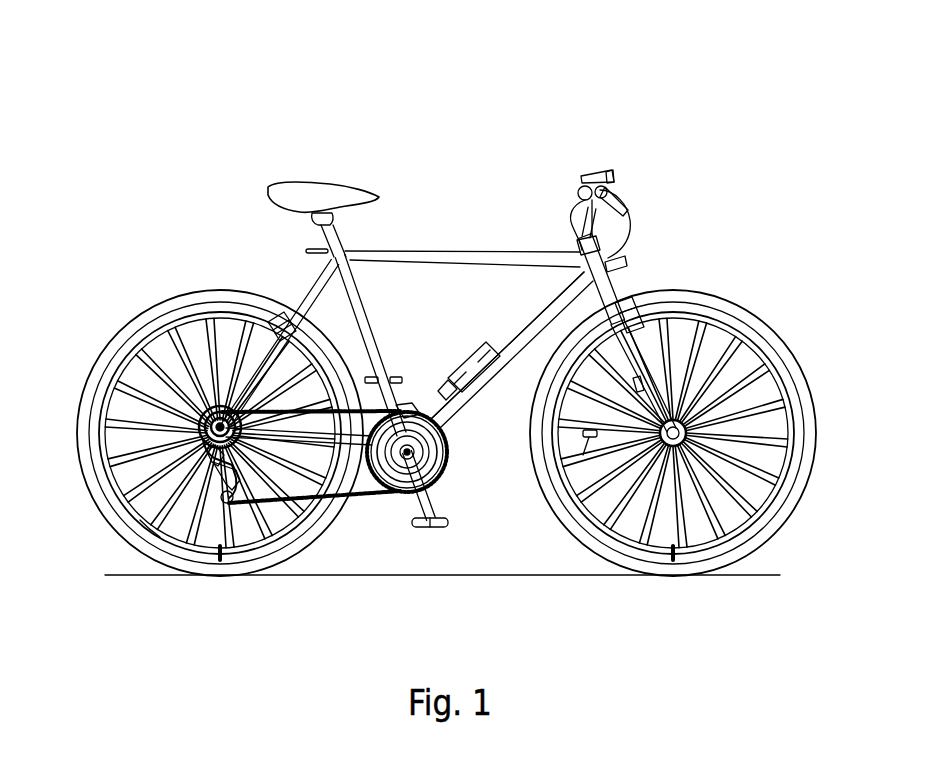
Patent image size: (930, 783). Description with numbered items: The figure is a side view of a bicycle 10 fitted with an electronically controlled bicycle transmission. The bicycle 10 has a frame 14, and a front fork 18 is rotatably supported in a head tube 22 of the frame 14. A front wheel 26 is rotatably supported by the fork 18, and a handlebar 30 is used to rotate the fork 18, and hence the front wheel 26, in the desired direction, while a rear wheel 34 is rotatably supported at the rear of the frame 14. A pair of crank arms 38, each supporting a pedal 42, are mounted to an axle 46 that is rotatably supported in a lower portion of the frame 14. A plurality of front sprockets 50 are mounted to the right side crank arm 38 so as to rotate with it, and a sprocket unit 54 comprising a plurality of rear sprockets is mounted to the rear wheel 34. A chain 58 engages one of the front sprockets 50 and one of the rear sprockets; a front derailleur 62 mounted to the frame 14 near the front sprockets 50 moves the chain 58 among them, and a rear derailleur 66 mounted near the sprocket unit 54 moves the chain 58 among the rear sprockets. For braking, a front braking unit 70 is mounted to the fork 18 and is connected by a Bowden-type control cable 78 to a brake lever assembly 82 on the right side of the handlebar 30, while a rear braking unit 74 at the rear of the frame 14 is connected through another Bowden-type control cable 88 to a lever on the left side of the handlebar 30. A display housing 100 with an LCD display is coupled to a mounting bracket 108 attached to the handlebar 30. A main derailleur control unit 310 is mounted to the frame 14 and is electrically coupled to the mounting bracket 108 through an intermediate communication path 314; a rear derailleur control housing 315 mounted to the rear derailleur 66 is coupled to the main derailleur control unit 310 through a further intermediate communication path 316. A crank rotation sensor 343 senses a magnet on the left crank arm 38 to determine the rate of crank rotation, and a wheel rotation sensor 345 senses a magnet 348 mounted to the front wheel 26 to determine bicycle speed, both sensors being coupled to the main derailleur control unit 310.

The bicycle 10 is at (370, 92).
The frame 14 is at (432, 250).
The front fork 18 is at (600, 305).
The head tube 22 is at (573, 245).
The front wheel 26 is at (797, 368).
The handlebar 30 is at (577, 190).
The rear wheel 34 is at (110, 340).
The crank arm 38 is at (428, 497).
The pedal 42 is at (390, 377).
The axle 46 is at (410, 453).
The front sprockets 50 is at (447, 437).
The sprocket unit 54 is at (110, 398).
The chain 58 is at (363, 498).
The front derailleur 62 is at (403, 405).
The rear derailleur 66 is at (178, 453).
The front braking unit 70 is at (647, 317).
The rear braking unit 74 is at (275, 325).
The Bowden-type control cable 78 is at (610, 268).
The brake lever assembly 82 is at (628, 199).
The Bowden-type control cable 88 is at (312, 282).
The display housing 100 is at (597, 172).
The mounting bracket 108 is at (614, 178).
The main derailleur control unit 310 is at (477, 343).
The intermediate communication path 314 is at (528, 325).
The rear derailleur control housing 315 is at (153, 522).
The intermediate communication path 316 is at (440, 390).
The crank rotation sensor 343 is at (337, 393).
The wheel rotation sensor 345 is at (641, 383).
The magnet 348 is at (587, 440).